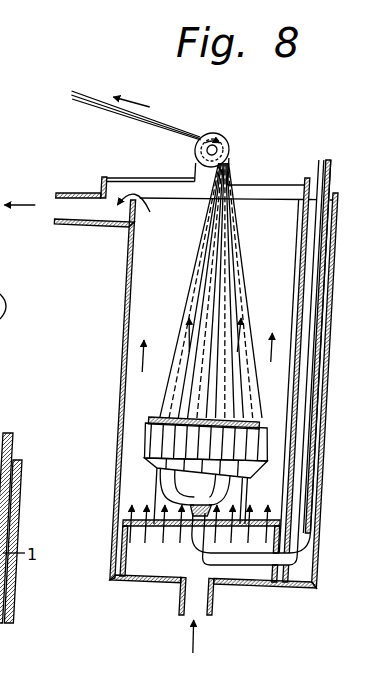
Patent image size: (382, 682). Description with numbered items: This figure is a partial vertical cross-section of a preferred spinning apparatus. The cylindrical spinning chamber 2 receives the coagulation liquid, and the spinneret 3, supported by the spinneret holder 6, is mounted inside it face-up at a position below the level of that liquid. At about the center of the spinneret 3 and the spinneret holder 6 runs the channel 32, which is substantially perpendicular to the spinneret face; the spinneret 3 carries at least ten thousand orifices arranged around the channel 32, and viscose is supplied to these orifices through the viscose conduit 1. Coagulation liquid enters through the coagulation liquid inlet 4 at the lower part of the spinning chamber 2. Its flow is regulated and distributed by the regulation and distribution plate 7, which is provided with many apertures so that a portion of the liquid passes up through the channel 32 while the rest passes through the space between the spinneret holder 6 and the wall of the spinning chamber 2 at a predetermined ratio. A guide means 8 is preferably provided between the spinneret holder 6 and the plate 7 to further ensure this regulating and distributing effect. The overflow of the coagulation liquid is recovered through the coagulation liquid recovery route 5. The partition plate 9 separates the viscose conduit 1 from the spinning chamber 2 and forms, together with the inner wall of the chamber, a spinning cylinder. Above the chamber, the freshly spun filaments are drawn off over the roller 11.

The viscose conduit 1 is at (306, 226).
The spinning chamber 2 is at (111, 396).
The spinneret 3 is at (247, 417).
The coagulation liquid inlet 4 is at (208, 618).
The coagulation liquid recovery route 5 is at (33, 213).
The spinneret holder 6 is at (258, 441).
The regulation and distribution plate 7 is at (172, 527).
The guide means 8 is at (243, 496).
The partition plate 9 is at (283, 178).
The take-up roller 11 is at (201, 138).
The channel 32 is at (193, 447).